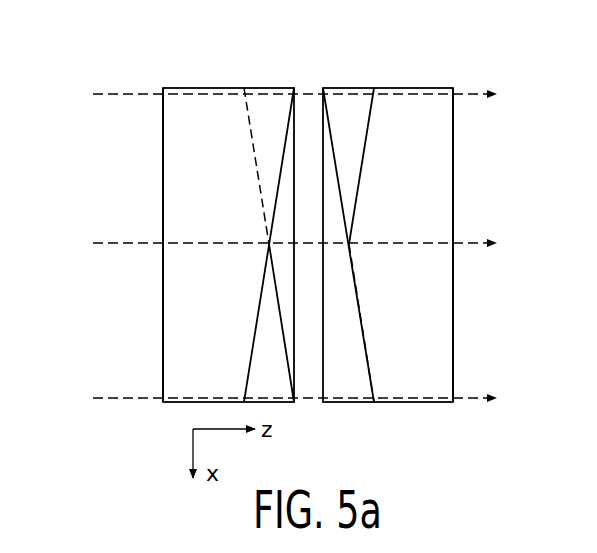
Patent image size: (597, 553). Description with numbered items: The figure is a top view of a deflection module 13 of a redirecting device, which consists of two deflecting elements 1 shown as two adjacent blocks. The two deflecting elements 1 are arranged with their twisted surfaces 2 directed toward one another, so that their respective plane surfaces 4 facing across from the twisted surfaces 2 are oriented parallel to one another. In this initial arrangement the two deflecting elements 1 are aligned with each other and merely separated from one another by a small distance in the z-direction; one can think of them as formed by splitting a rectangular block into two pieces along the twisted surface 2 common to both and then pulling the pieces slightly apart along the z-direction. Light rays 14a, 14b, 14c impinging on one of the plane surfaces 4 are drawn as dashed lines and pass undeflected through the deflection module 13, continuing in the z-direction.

The deflecting element 1 is at (206, 86).
The deflection module 13 is at (315, 76).
The twisted surface 2 is at (282, 191).
The plane surface 4 is at (163, 354).
The light ray 14a is at (321, 106).
The light ray 14b is at (319, 255).
The light ray 14c is at (319, 410).